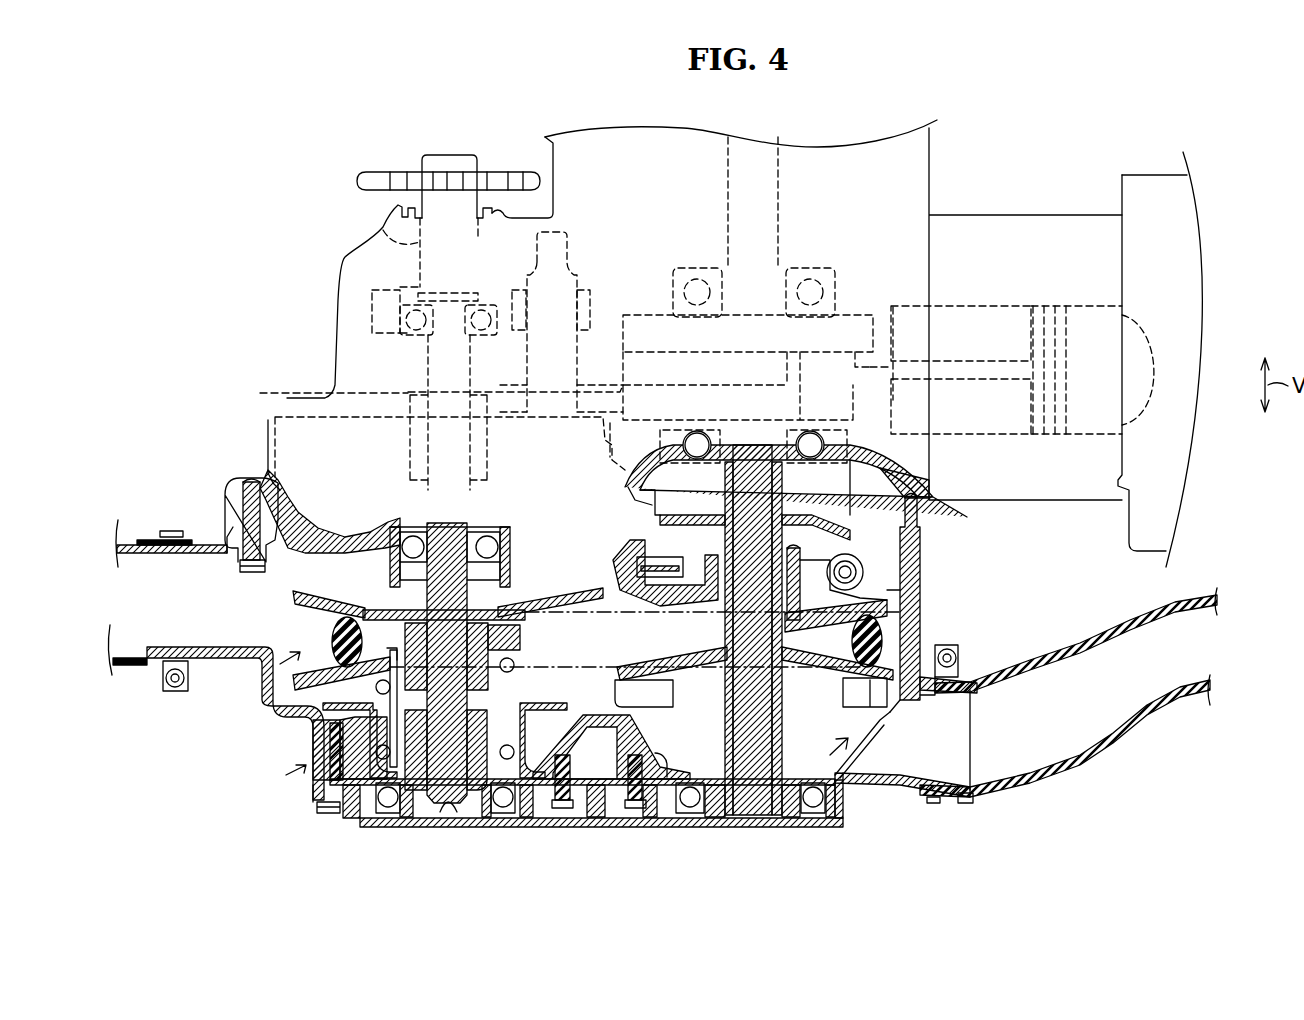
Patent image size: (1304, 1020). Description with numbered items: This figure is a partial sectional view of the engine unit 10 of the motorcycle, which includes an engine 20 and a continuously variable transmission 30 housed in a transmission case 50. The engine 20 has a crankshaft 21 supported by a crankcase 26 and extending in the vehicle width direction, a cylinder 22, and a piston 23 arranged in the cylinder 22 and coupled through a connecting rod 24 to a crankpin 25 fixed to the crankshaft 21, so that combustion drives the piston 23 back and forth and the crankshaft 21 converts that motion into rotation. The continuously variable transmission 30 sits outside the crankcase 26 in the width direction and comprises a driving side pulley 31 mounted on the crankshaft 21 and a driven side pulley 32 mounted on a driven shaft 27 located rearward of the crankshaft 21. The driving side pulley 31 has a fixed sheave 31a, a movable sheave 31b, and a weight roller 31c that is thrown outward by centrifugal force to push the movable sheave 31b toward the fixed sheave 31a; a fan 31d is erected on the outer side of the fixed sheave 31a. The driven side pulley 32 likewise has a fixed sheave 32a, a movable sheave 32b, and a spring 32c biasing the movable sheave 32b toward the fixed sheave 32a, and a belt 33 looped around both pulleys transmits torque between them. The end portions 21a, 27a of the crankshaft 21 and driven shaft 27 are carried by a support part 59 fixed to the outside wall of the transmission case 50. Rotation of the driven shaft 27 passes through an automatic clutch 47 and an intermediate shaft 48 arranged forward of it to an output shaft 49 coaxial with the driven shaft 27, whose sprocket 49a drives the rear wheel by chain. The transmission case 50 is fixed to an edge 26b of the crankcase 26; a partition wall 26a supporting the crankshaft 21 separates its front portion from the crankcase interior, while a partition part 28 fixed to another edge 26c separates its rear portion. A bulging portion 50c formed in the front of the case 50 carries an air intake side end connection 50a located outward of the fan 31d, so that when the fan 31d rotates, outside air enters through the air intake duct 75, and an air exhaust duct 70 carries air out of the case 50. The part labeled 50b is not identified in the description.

The engine unit 10 is at (1039, 140).
The engine 20 is at (1064, 210).
The crankshaft 21 is at (728, 212).
The end portion of crankshaft 21a is at (770, 827).
The cylinder 22 is at (988, 436).
The piston 23 is at (1040, 312).
The connecting rod 24 is at (990, 340).
The crankpin 25 is at (884, 345).
The crankcase 26 is at (930, 177).
The partition wall 26a is at (833, 478).
The edge of crankcase 26b is at (233, 553).
The edge of crankcase 26c is at (284, 550).
The driven shaft 27 is at (497, 597).
The end portion of driven shaft 27a is at (465, 828).
The partition part 28 is at (290, 549).
The continuously variable transmission 30 is at (868, 795).
The driving side pulley 31 is at (905, 600).
The fixed sheave 31a is at (812, 681).
The movable sheave 31b is at (916, 586).
The weight roller 31c is at (855, 566).
The fan 31d is at (888, 724).
The driven side pulley 32 is at (274, 704).
The fixed sheave 32a is at (360, 586).
The movable sheave 32b is at (298, 718).
The spring 32c is at (527, 684).
The belt 33 is at (906, 645).
The automatic clutch 47 is at (298, 392).
The intermediate shaft 48 is at (574, 250).
The output shaft 49 is at (384, 233).
The sprocket 49a is at (386, 180).
The transmission case 50 is at (292, 790).
The air intake side end connection 50a is at (938, 808).
The bolt 50b is at (204, 665).
The bulging portion 50c is at (665, 827).
The support part 59 is at (356, 830).
The air exhaust duct 70 is at (150, 535).
The air intake duct 75 is at (1105, 770).